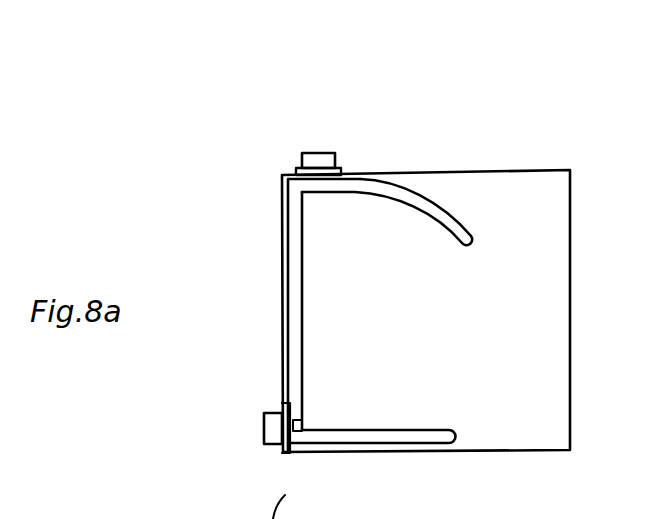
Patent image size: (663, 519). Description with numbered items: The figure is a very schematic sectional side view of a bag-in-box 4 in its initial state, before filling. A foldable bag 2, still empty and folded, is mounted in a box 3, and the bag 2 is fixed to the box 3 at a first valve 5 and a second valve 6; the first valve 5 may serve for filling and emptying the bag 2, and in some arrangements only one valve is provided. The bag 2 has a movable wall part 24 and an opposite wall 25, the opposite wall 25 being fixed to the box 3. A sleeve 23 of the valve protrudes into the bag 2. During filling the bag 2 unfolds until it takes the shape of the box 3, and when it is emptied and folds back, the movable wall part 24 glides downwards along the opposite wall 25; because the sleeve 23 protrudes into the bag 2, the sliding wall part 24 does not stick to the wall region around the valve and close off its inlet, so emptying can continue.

The foldable bag 2 is at (432, 205).
The box 3 is at (543, 166).
The bag-in-box 4 is at (418, 100).
The first valve 5 is at (262, 428).
The second valve 6 is at (328, 157).
The sleeve 23 is at (305, 430).
The movable wall part 24 is at (303, 273).
The opposite wall 25 is at (290, 250).